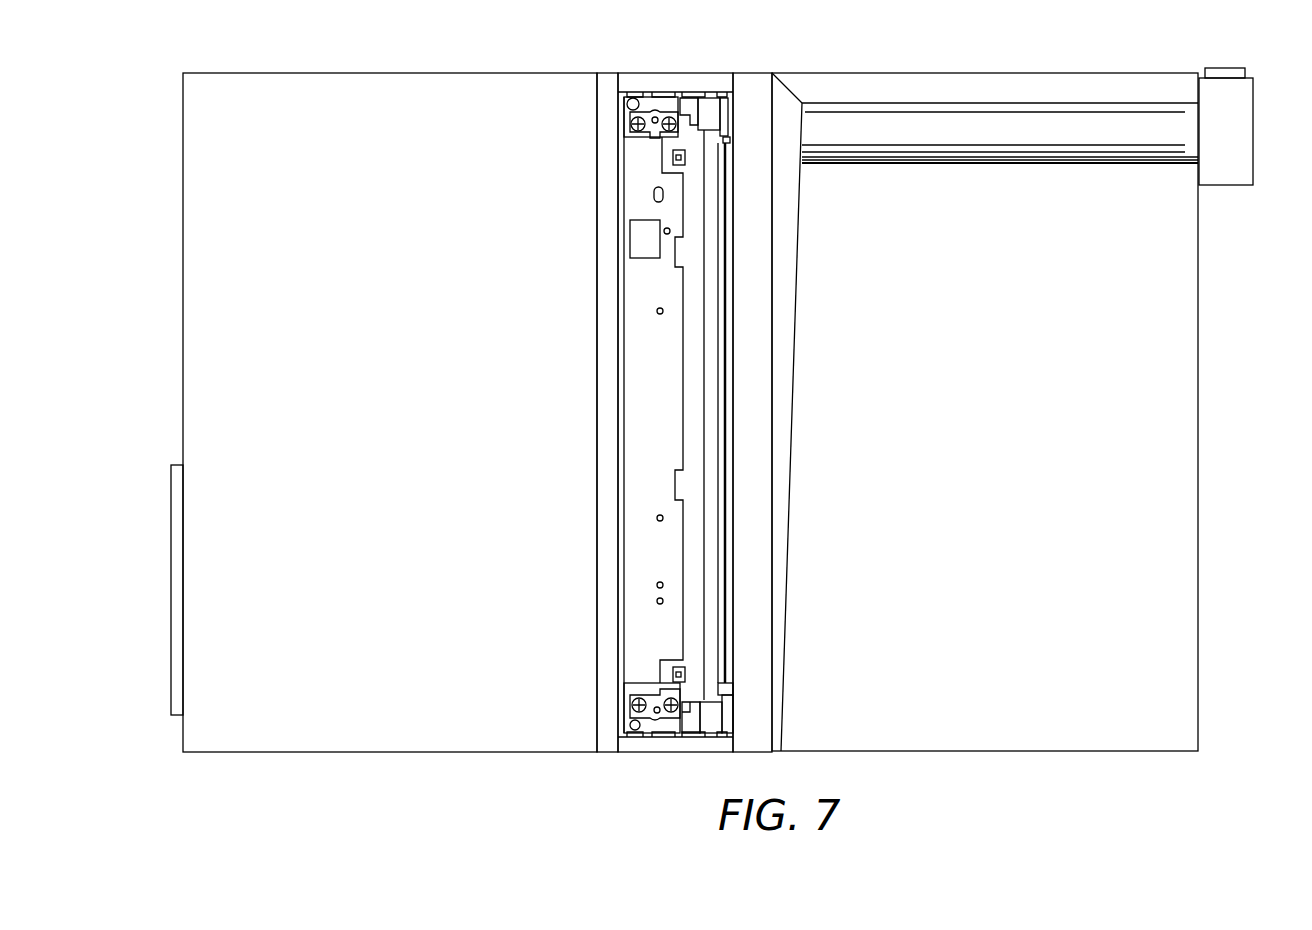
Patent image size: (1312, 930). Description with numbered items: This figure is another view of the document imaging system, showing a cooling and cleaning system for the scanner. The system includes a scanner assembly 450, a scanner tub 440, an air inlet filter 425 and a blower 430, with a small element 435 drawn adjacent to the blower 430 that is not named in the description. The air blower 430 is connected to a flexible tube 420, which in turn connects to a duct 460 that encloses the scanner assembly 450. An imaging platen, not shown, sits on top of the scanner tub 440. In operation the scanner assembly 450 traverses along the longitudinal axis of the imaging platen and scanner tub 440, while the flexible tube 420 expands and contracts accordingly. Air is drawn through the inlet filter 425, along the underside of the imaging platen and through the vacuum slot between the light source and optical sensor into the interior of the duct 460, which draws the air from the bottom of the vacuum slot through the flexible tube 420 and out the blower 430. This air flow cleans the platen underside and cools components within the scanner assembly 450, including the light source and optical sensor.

The flexible tube 420 is at (953, 165).
The air inlet filter 425 is at (171, 547).
The blower 430 is at (1222, 185).
The tab 435 is at (1245, 72).
The scanner tub 440 is at (363, 752).
The scanner assembly 450 is at (679, 743).
The duct 460 is at (597, 485).